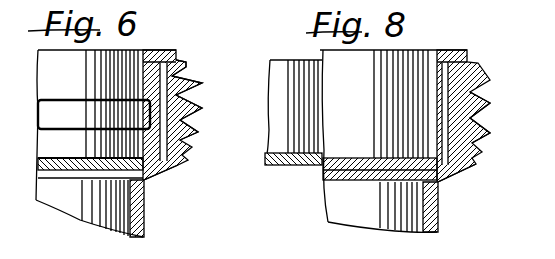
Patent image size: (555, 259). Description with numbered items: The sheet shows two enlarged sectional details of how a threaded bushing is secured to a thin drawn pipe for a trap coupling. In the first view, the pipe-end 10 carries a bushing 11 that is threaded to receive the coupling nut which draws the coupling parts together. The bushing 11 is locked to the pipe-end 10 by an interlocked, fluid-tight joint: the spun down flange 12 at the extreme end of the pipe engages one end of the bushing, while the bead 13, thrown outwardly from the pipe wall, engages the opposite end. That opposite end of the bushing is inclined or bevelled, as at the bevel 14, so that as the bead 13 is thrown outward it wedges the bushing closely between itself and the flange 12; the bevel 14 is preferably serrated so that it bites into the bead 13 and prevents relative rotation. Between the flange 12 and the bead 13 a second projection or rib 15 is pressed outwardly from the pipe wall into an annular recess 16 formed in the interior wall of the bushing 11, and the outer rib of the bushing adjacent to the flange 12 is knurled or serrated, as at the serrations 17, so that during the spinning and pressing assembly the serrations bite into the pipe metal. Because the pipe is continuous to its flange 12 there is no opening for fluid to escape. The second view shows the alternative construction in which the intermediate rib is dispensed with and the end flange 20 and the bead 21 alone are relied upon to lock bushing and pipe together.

In FIG. 6, the pipe-end 10 is at (144, 234).
In FIG. 6, the bushing 11 is at (187, 80).
In FIG. 8, the bushing 11 is at (476, 118).
In FIG. 6, the spun down flange 12 is at (173, 48).
In FIG. 6, the bead 13 is at (147, 180).
In FIG. 6, the bevel 14 is at (189, 162).
In FIG. 6, the rib 15 is at (201, 108).
In FIG. 6, the recess 16 is at (200, 133).
In FIG. 6, the serrations 17 is at (203, 83).
In FIG. 8, the end flange 20 is at (462, 56).
In FIG. 8, the bead 21 is at (447, 173).